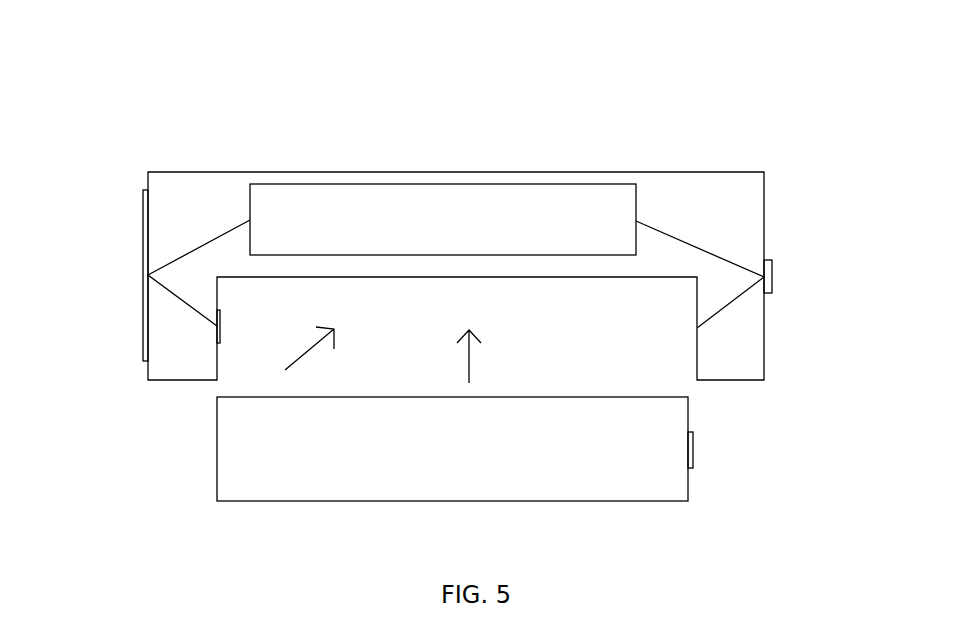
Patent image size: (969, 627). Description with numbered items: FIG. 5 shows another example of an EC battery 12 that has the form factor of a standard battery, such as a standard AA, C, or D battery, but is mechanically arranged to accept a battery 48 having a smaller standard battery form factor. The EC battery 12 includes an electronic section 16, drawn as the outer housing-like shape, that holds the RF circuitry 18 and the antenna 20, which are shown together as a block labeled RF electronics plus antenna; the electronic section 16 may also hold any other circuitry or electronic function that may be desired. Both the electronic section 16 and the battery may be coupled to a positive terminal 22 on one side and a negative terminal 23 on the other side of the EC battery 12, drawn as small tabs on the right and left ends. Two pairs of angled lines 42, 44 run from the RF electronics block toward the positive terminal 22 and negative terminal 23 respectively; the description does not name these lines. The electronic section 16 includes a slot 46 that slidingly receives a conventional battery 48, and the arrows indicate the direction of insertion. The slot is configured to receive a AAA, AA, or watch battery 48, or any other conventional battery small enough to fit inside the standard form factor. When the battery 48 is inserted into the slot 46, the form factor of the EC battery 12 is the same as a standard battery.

The EC battery 12 is at (153, 72).
The electronic section 16 is at (682, 173).
The RF circuitry 18 is at (443, 188).
The antenna 20 is at (387, 183).
The positive terminal 22 is at (768, 260).
The negative terminal 23 is at (142, 243).
The left lead 42 is at (227, 232).
The right lead 44 is at (667, 233).
The slot 46 is at (292, 355).
The battery 48 is at (583, 397).